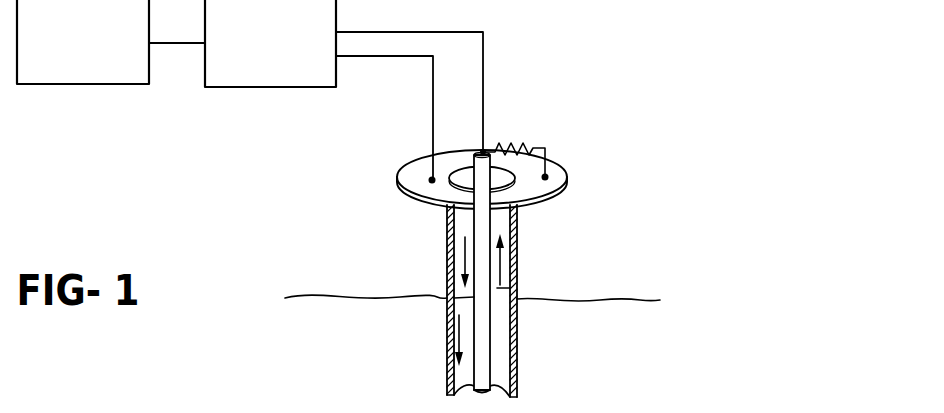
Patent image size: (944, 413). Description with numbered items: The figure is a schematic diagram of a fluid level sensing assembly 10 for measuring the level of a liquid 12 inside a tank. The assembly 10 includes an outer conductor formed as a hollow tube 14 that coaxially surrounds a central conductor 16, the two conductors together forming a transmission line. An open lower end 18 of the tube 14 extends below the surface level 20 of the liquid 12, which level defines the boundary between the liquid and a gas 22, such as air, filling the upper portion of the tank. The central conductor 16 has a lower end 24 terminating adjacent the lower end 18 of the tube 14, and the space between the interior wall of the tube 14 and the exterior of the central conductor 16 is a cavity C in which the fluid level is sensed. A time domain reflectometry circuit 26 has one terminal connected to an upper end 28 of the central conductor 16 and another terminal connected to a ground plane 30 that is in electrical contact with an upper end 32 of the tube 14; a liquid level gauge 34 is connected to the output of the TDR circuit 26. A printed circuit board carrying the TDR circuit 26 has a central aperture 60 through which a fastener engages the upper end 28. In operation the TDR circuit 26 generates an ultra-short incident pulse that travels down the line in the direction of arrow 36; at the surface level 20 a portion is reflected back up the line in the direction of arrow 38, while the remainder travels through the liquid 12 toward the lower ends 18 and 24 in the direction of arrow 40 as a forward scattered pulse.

The fluid level sensing assembly 10 is at (607, 68).
The liquid 12 is at (589, 344).
The hollow tube 14 is at (538, 288).
The central conductor 16 is at (477, 228).
The open lower end 18 is at (514, 397).
The surface level 20 is at (310, 297).
The gas 22 is at (650, 267).
The lower end 24 is at (447, 398).
The time domain reflectometry (TDR) circuit 26 is at (285, 87).
The upper end 28 is at (485, 151).
The ground plane 30 is at (401, 170).
The upper end 32 is at (518, 225).
The liquid level gauge 34 is at (73, 85).
The arrow 36 is at (460, 258).
The arrow 38 is at (518, 267).
The arrow 40 is at (453, 333).
The central aperture 60 is at (527, 142).
The cavity C is at (517, 289).